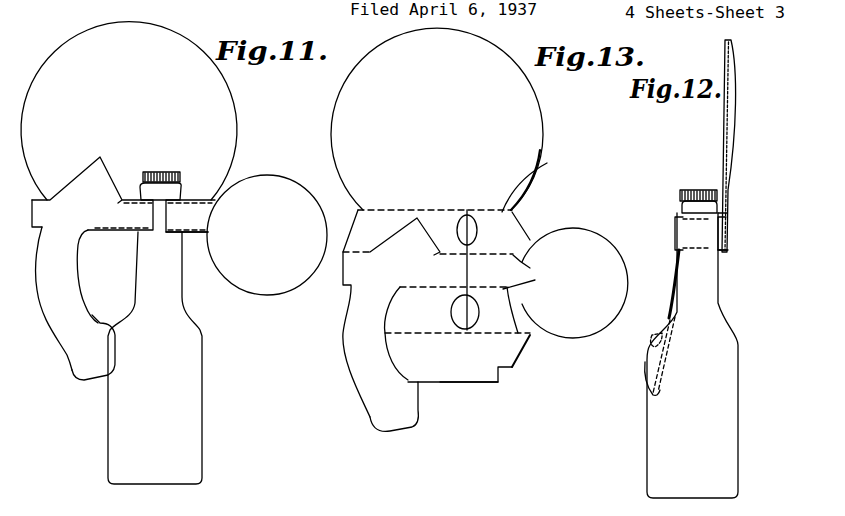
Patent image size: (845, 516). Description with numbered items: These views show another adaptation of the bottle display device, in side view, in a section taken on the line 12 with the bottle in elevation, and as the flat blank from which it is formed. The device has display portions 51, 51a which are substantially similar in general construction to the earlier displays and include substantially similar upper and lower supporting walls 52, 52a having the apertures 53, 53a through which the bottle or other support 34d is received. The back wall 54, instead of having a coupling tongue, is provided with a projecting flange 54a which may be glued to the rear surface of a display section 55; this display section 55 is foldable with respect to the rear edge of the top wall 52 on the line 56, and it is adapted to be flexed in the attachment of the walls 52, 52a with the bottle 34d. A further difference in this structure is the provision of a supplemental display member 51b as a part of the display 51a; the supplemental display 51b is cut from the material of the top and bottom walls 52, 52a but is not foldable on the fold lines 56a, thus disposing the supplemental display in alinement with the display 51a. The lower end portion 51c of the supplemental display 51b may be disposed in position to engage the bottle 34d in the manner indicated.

In FIG. 11, the display section 55 is at (220, 101).
In FIG. 13, the display section 55 is at (527, 128).
In FIG. 12, the display section 55 is at (734, 123).
In FIG. 11, the section line 12 is at (190, 122).
In FIG. 11, the display portion 51 is at (272, 186).
In FIG. 11, the upper supporting wall 52 is at (197, 199).
In FIG. 13, the upper supporting wall 52 is at (518, 231).
In FIG. 11, the display portion 51a is at (110, 223).
In FIG. 12, the display portion 51a is at (675, 232).
In FIG. 11, the supplemental display member 51b is at (52, 337).
In FIG. 12, the supplemental display member 51b is at (672, 300).
In FIG. 11, the lower end portion of supplemental display 51c is at (95, 381).
In FIG. 13, the lower end portion of supplemental display 51c is at (412, 428).
In FIG. 12, the lower end portion of supplemental display 51c is at (643, 367).
In FIG. 11, the lower supporting wall 52a is at (192, 235).
In FIG. 13, the lower supporting wall 52a is at (525, 350).
In FIG. 12, the lower supporting wall 52a is at (719, 254).
In FIG. 11, the bottle 34d is at (200, 410).
In FIG. 12, the bottle 34d is at (733, 417).
In FIG. 13, the aperture 53 is at (477, 216).
In FIG. 13, the aperture 53a is at (462, 330).
In FIG. 13, the fold line 56 is at (546, 173).
In FIG. 13, the fold lines 56a is at (530, 268).
In FIG. 13, the back wall 54 is at (502, 355).
In FIG. 12, the back wall 54 is at (729, 240).
In FIG. 13, the projecting flange 54a is at (483, 384).
In FIG. 12, the projecting flange 54a is at (731, 213).